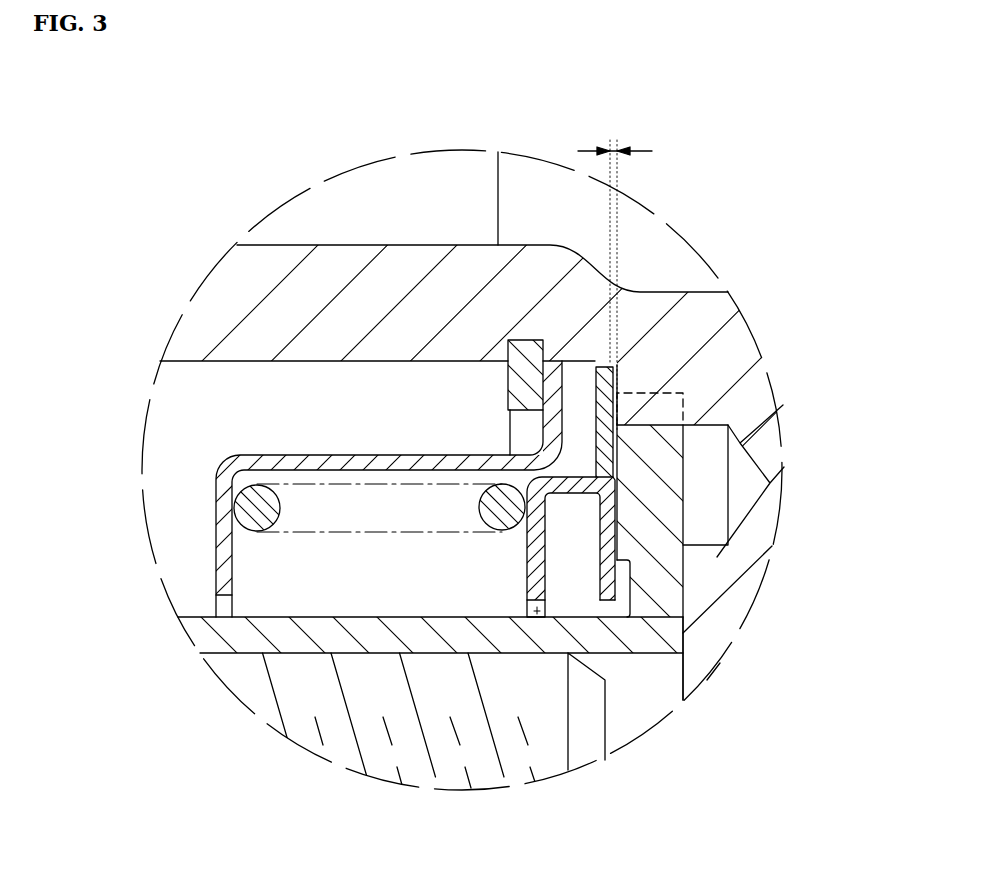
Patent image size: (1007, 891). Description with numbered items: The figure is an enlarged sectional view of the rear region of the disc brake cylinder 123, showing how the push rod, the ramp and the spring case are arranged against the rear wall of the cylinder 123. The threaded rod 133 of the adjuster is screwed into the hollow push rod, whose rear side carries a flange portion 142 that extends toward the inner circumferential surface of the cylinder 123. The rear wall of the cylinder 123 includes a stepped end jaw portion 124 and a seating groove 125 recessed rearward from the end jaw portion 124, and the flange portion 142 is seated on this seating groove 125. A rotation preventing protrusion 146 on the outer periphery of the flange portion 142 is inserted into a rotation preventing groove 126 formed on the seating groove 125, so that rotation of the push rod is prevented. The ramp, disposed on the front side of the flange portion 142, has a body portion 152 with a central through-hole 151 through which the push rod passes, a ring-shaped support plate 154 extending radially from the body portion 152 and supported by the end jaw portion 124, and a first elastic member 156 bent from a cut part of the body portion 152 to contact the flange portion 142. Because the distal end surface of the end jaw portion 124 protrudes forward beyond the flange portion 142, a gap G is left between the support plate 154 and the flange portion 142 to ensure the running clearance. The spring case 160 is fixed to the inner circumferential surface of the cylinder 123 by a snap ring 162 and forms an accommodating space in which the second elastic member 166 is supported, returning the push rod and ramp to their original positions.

The cylinder 123 is at (347, 262).
The end jaw portion 124 is at (607, 396).
The seating groove 125 is at (683, 685).
The rotation preventing groove 126 is at (683, 397).
The rod 133 is at (383, 752).
The flange portion 142 is at (667, 608).
The rotation preventing protrusion 146 is at (688, 428).
The through-hole 151 is at (528, 610).
The body portion 152 is at (536, 547).
The support plate 154 is at (605, 362).
The first elastic member 156 is at (620, 533).
The spring case 160 is at (220, 541).
The snap ring 162 is at (527, 343).
The second elastic member 166 is at (240, 505).
The gap G is at (615, 276).